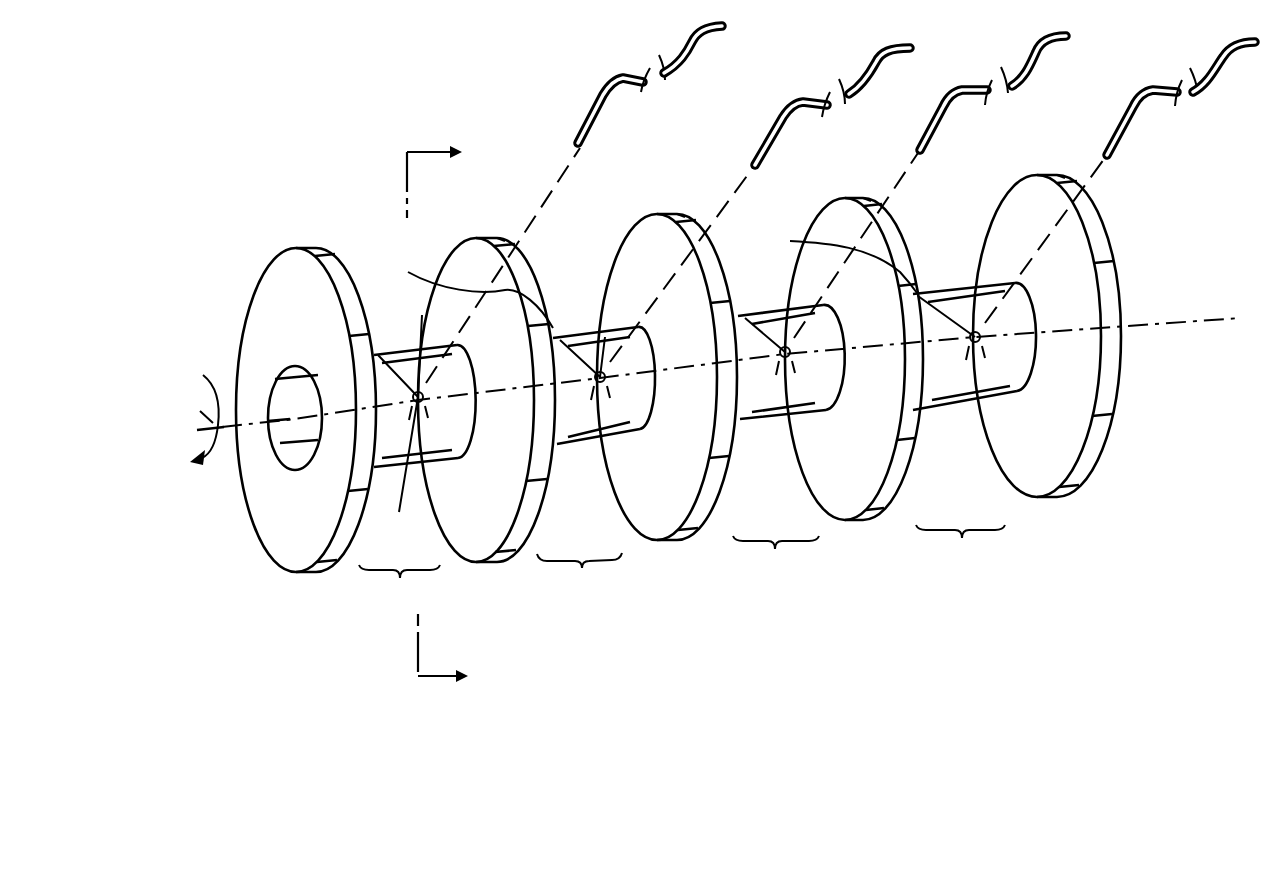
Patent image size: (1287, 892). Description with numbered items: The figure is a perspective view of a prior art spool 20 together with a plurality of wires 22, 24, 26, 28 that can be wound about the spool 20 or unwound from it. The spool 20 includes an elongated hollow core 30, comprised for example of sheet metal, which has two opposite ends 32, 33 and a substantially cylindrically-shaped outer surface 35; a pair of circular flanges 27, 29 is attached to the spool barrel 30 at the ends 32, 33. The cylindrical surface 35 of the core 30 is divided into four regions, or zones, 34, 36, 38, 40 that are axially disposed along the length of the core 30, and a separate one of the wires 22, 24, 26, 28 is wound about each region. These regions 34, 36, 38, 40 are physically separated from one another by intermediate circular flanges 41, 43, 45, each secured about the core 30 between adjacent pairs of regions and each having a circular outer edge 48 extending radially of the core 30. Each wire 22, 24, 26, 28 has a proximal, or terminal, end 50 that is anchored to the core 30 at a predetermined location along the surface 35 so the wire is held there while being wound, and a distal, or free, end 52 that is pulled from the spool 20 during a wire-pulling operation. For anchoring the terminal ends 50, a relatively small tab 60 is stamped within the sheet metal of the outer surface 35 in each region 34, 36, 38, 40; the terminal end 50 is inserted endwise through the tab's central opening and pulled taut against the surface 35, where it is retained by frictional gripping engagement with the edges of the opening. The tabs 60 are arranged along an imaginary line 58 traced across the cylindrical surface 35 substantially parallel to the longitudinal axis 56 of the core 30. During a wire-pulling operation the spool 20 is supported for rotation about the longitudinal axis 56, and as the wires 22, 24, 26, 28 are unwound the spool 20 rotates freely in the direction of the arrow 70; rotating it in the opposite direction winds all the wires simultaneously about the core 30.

The spool 20 is at (219, 211).
The wire 22 is at (590, 110).
The wire 24 is at (790, 103).
The wire 26 is at (950, 95).
The wire 28 is at (1150, 110).
The circular flange 27 is at (279, 443).
The circular flange 29 is at (1096, 369).
The core 30 is at (347, 341).
The end 32 is at (276, 303).
The end 33 is at (1117, 295).
The region 34 is at (399, 591).
The outer surface 35 is at (400, 348).
The region 36 is at (579, 578).
The region 38 is at (776, 561).
The region 40 is at (960, 550).
The intermediate circular flange 41 is at (515, 550).
The intermediate circular flange 43 is at (697, 534).
The intermediate circular flange 45 is at (873, 521).
The circular outer edge 48 is at (637, 207).
The terminal end 50 is at (755, 158).
The free end 52 is at (878, 55).
The longitudinal axis 56 is at (200, 428).
The imaginary line 58 is at (1017, 397).
The tab 60 is at (422, 315).
The arrow 70 is at (194, 412).